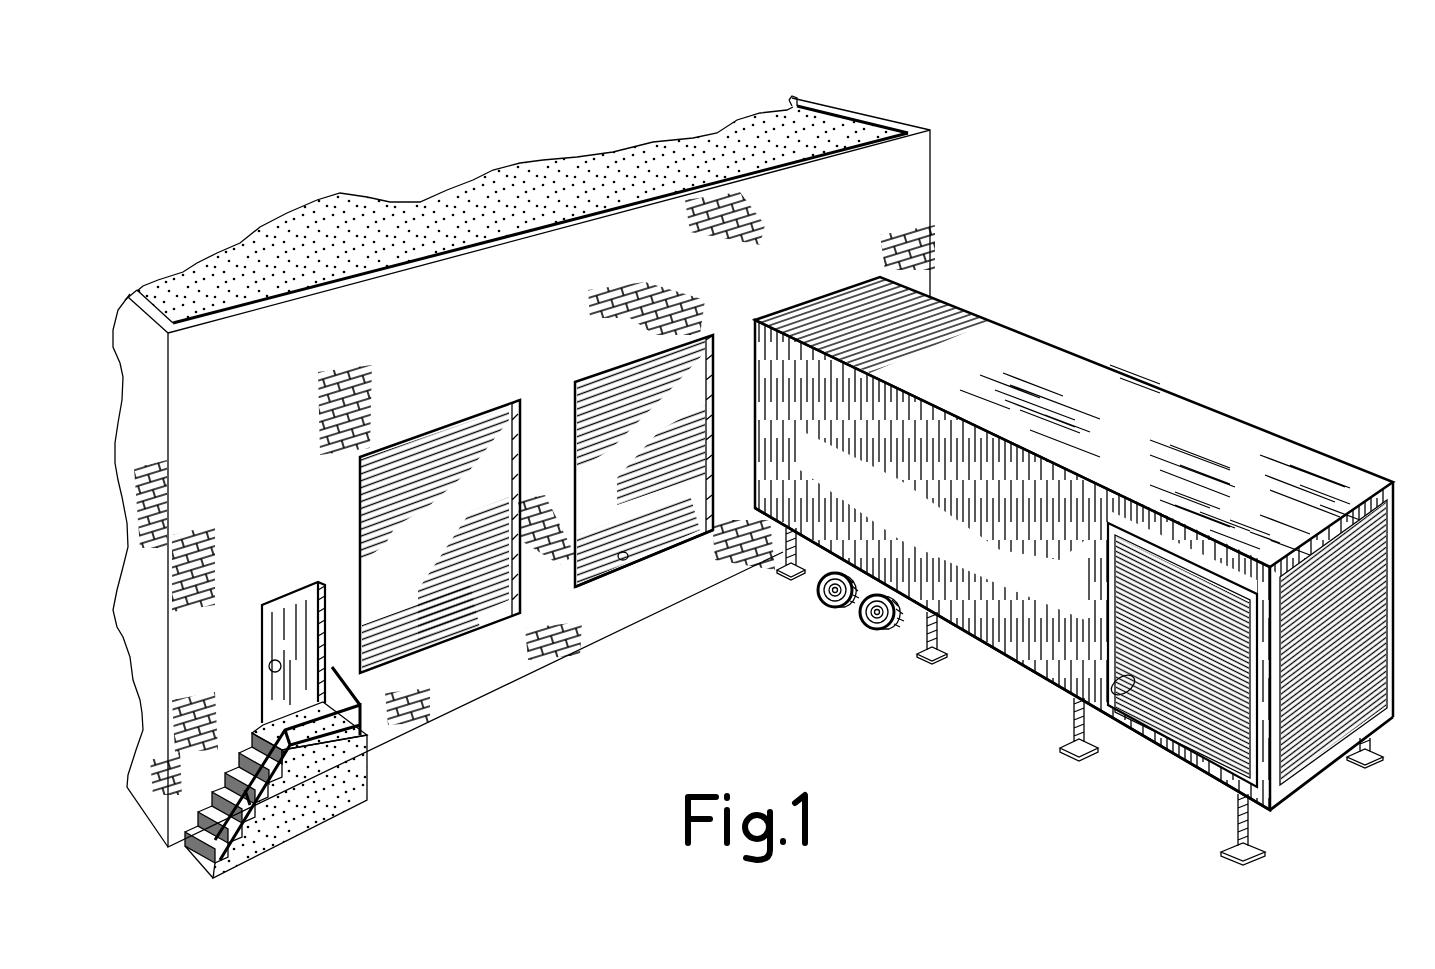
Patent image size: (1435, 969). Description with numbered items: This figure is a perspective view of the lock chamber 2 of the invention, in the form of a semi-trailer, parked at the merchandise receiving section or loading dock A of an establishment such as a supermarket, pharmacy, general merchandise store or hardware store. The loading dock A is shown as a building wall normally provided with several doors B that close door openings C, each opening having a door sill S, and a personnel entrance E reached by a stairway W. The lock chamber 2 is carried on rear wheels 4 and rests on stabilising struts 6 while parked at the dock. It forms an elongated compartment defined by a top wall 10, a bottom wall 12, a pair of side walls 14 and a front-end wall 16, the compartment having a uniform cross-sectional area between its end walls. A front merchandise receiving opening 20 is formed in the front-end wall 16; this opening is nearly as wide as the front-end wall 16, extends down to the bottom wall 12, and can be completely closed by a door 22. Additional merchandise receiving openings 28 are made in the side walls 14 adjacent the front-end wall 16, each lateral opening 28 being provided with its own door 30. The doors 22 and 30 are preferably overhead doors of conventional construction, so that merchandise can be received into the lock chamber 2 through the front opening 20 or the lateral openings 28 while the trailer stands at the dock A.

The lock chamber 2 is at (1094, 571).
The rear wheels 4 is at (873, 636).
The stabilising struts 6 is at (782, 569).
The top wall 10 is at (1195, 432).
The bottom wall 12 is at (1023, 672).
The side walls 14 is at (862, 513).
The front-end wall 16 is at (1393, 565).
The front merchandise receiving opening 20 is at (1396, 587).
The door 22 is at (1363, 626).
The additional merchandise receiving openings 28 is at (1128, 697).
The door 30 is at (1200, 735).
The loading dock A is at (920, 162).
The doors B is at (665, 517).
The door openings C is at (700, 512).
The personnel entrance E is at (269, 667).
The door sill S is at (625, 560).
The stairway W is at (352, 790).